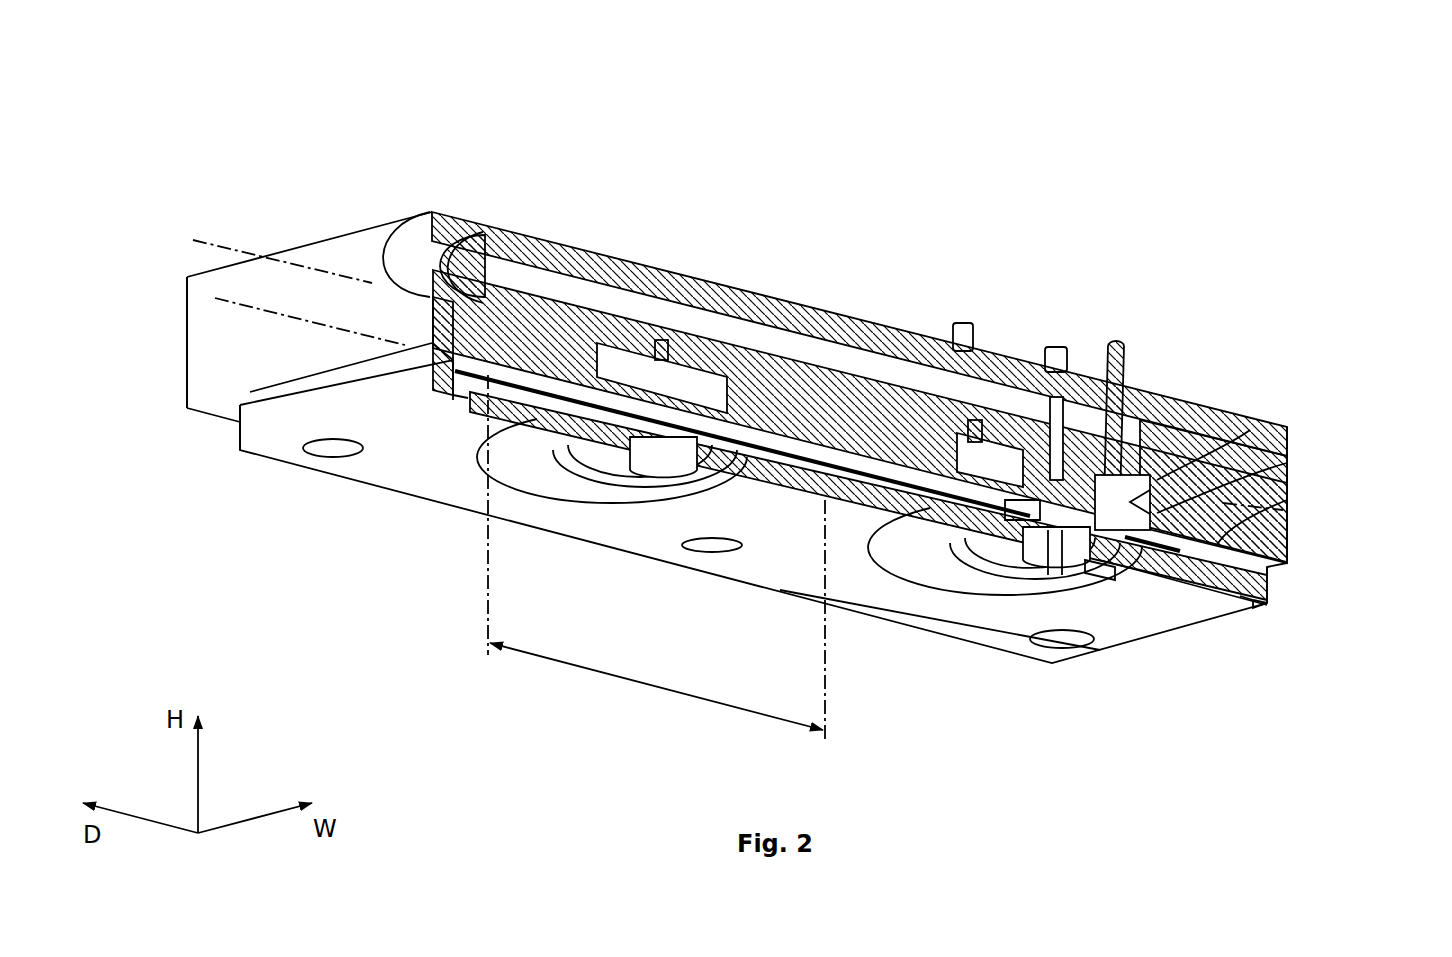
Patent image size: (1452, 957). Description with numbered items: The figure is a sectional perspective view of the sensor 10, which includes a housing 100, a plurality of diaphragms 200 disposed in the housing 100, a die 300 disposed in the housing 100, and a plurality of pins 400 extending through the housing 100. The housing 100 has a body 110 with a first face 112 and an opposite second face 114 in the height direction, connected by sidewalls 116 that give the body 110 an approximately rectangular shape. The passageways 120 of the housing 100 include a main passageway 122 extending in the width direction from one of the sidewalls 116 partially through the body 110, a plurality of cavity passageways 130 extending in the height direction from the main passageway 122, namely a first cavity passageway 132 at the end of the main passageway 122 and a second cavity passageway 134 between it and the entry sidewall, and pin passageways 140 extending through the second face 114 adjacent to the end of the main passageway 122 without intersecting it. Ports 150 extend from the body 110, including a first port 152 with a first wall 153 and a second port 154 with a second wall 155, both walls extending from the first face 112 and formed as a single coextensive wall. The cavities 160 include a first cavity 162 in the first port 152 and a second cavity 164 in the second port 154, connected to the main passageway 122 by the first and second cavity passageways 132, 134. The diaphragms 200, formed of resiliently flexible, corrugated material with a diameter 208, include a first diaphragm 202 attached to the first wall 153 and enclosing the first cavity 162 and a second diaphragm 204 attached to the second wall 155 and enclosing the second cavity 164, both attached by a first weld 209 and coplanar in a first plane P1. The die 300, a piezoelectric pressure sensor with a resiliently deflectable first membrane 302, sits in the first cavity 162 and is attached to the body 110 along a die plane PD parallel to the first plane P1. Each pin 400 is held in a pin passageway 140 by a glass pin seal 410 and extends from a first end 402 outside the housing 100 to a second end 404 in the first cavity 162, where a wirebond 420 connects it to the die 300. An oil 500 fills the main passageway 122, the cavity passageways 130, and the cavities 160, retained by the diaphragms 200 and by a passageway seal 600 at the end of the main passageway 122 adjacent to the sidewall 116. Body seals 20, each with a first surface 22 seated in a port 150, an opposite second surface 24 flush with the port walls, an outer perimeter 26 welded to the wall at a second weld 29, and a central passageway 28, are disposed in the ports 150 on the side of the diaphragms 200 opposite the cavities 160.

The sensor 10 is at (237, 97).
The housing 100 is at (1295, 408).
The body 110 is at (288, 240).
The first face 112 is at (290, 390).
The second face 114 is at (563, 242).
The sidewalls 116 is at (190, 300).
The passageways 120 is at (860, 388).
The main passageway 122 is at (782, 343).
The cavity passageways 130 is at (818, 306).
The first cavity passageway 132 is at (972, 420).
The second cavity passageway 134 is at (663, 340).
The pin passageways 140 is at (1130, 372).
The ports 150 is at (803, 511).
The first port 152 is at (1305, 597).
The second port 154 is at (345, 425).
The first wall 153 is at (1257, 605).
The second wall 155 is at (413, 387).
The cavities 160 is at (1002, 392).
The first cavity 162 is at (1140, 508).
The second cavity 164 is at (607, 353).
The body seals 20 is at (527, 507).
The first surface 22 is at (678, 530).
The second surface 24 is at (668, 500).
The outer perimeter 26 is at (453, 395).
The central passageway 28 is at (643, 480).
The second weld 29 is at (453, 408).
The diaphragms 200 is at (826, 562).
The first diaphragm 202 is at (1120, 590).
The second diaphragm 204 is at (560, 413).
The diameter 208 is at (627, 680).
The first weld 209 is at (430, 300).
The die 300 is at (1022, 520).
The first membrane 302 is at (1050, 578).
The pins 400 is at (1127, 447).
The first end 402 is at (1057, 350).
The second end 404 is at (1200, 493).
The pin seal 410 is at (1095, 515).
The wirebond 420 is at (1100, 580).
The oil 500 is at (762, 347).
The passageway seal 600 is at (487, 262).
The die plane PD is at (1190, 545).
The first plane P1 is at (1210, 575).